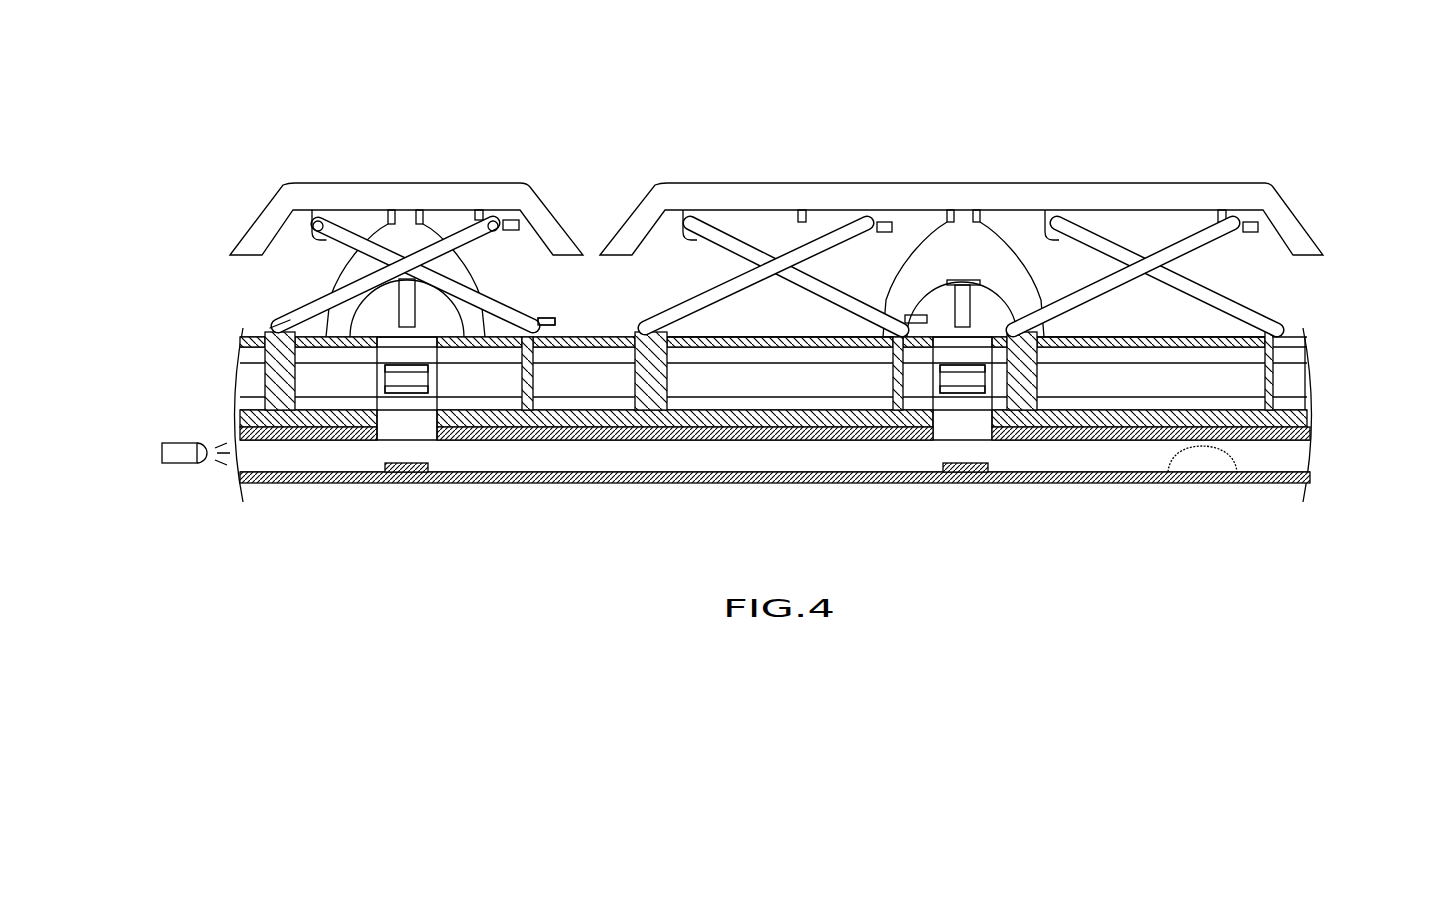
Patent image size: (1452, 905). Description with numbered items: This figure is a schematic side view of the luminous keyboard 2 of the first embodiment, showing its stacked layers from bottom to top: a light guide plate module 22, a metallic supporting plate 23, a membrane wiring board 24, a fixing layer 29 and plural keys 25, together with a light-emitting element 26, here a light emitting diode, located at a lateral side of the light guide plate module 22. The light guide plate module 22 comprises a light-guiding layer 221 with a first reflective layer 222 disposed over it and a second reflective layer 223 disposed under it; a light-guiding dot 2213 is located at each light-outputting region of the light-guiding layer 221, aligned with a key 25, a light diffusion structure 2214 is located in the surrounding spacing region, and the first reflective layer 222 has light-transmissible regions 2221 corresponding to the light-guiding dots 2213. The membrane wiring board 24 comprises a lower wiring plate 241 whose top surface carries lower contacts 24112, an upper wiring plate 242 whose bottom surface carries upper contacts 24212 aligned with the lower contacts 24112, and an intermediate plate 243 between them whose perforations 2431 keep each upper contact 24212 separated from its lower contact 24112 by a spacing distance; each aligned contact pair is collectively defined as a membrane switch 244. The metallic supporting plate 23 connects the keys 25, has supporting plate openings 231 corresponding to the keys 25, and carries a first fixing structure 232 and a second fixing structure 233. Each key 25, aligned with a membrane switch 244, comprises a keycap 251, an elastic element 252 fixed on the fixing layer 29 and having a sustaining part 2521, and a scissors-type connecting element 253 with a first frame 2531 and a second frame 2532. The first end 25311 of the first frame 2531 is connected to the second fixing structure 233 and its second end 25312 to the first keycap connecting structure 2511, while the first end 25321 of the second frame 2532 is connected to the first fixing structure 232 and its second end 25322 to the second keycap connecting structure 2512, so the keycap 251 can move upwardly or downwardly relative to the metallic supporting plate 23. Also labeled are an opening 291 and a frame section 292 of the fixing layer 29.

The luminous keyboard 2 is at (1183, 87).
The light guide plate module 22 is at (1392, 425).
The light-guiding layer 221 is at (1290, 460).
The first reflective layer 222 is at (1288, 437).
The second reflective layer 223 is at (1285, 482).
The light-guiding dot 2213 is at (407, 433).
The light diffusion structure 2214 is at (1205, 462).
The light-transmissible region 2221 is at (430, 440).
The metallic supporting plate 23 is at (252, 410).
The supporting plate opening 231 is at (470, 437).
The first fixing structure 232 is at (268, 338).
The second fixing structure 233 is at (548, 322).
The membrane wiring board 24 is at (1392, 295).
The lower wiring plate 241 is at (1297, 403).
The upper wiring plate 242 is at (1283, 350).
The intermediate plate 243 is at (1290, 380).
The membrane switch 244 is at (890, 65).
The lower contact 24112 is at (835, 505).
The upper contact 24212 is at (1170, 165).
The perforation 2431 is at (1125, 512).
The key 25 is at (700, 65).
The keycap 251 is at (215, 210).
The elastic element 252 is at (410, 248).
The connecting element 253 is at (265, 140).
The first keycap connecting structure 2511 is at (318, 236).
The second keycap connecting structure 2512 is at (525, 236).
The sustaining part 2521 is at (407, 305).
The first frame 2531 is at (480, 335).
The second frame 2532 is at (450, 240).
The first end of the first frame 25311 is at (535, 347).
The second end of the first frame 25312 is at (318, 215).
The first end of the second frame 25321 is at (285, 320).
The second end of the second frame 25322 is at (495, 225).
The light-emitting element 26 is at (185, 455).
The fixing layer 29 is at (245, 345).
The opening 291 is at (950, 330).
The frame section 292 is at (830, 340).